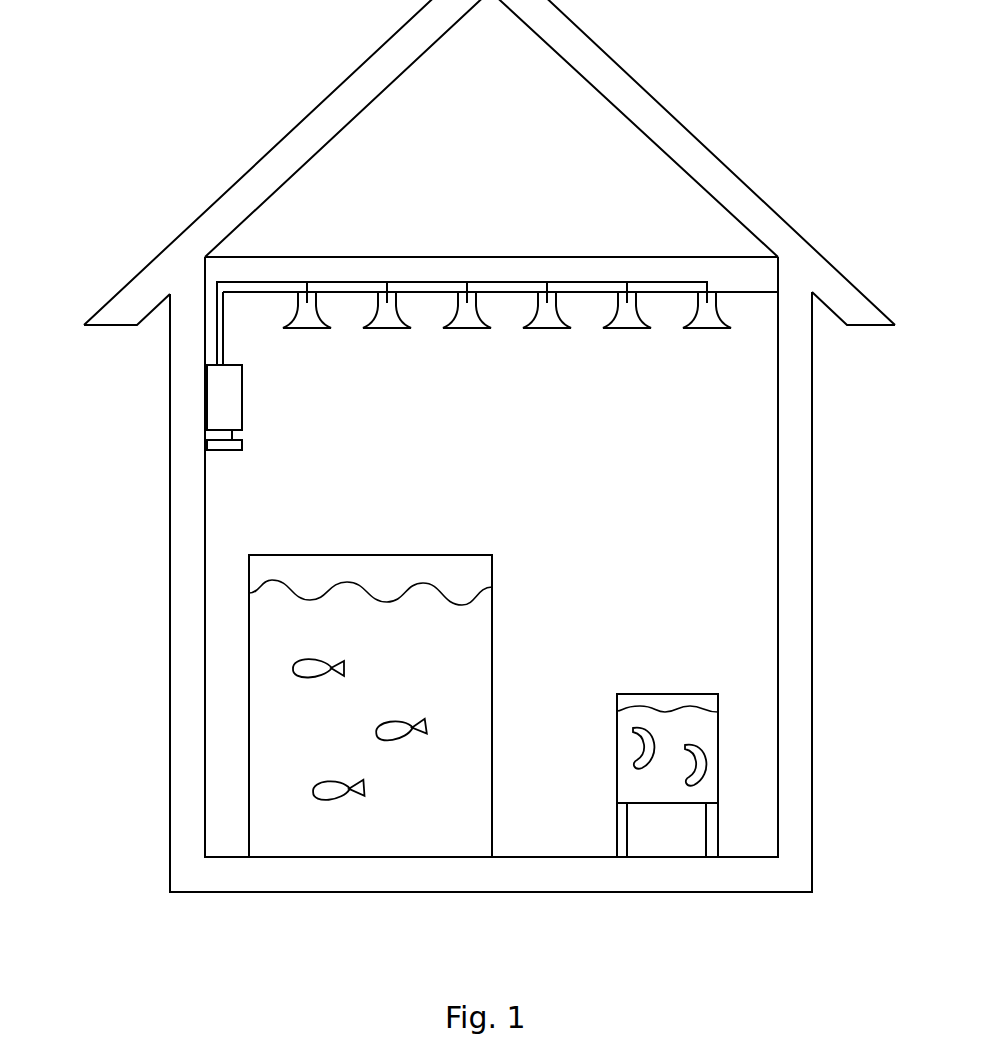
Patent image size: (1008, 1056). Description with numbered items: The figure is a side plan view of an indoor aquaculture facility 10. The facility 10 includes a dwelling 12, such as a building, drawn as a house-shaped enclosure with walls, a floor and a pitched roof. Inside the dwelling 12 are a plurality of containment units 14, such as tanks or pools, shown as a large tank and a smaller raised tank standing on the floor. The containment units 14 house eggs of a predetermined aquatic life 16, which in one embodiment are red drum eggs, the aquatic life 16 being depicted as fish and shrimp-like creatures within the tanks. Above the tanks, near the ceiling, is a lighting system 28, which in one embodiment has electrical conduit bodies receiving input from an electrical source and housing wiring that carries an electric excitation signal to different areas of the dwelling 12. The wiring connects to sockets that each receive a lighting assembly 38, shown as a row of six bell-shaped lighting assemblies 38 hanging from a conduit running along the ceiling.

The indoor facility 10 is at (105, 131).
The dwelling 12 is at (170, 590).
The containment unit 14 is at (492, 617).
The aquatic life 16 is at (327, 658).
The lighting system 28 is at (526, 165).
The lighting assembly 38 is at (290, 329).